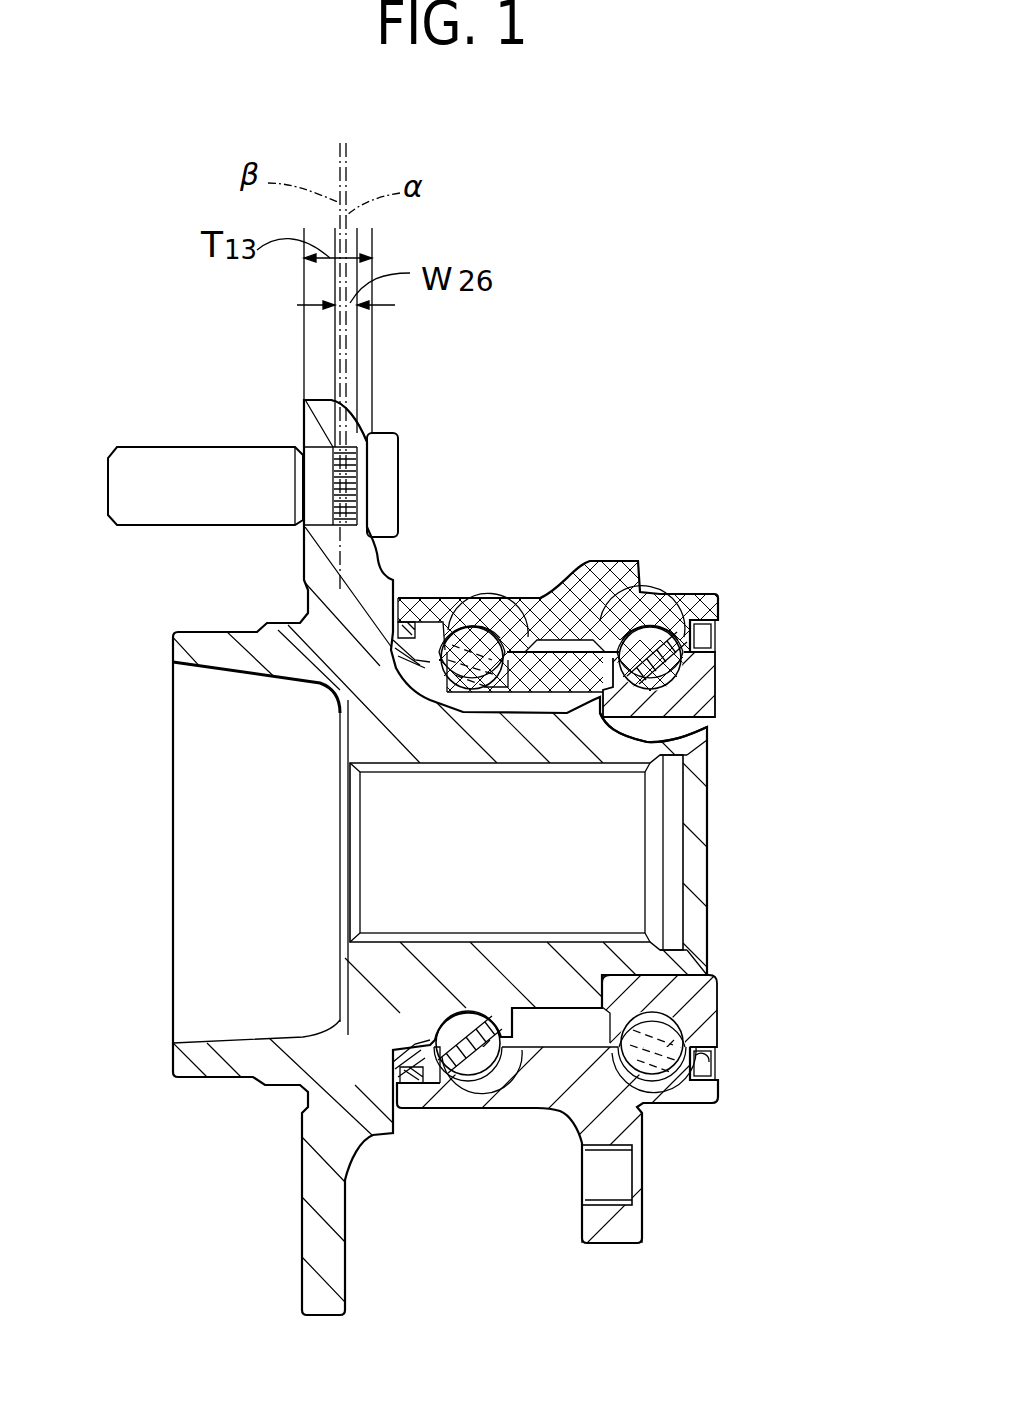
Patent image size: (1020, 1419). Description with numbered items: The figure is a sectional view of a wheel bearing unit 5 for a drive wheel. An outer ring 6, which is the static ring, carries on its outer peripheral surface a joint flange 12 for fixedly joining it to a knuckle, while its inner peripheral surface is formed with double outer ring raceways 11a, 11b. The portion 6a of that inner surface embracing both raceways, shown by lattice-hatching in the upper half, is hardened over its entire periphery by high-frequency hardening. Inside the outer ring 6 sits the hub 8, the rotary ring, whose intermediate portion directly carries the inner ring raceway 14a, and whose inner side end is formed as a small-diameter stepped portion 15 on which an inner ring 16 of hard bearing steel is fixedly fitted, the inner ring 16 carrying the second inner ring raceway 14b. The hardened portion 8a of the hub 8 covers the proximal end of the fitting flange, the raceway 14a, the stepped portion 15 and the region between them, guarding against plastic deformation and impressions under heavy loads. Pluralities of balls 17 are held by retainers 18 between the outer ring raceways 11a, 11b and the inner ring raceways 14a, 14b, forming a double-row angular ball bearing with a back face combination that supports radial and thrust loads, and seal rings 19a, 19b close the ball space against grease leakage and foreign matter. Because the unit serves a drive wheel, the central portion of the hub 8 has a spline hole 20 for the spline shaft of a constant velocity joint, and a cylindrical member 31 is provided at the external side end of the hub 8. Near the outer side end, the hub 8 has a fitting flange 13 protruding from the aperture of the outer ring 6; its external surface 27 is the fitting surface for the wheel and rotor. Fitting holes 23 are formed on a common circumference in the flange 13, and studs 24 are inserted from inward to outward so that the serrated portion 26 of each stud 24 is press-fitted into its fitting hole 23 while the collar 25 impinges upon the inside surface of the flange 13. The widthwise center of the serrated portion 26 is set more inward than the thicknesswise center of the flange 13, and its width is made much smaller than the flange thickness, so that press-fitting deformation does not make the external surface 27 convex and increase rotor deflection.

The wheel bearing unit 5 is at (636, 506).
The outer ring 6 is at (505, 894).
The hardened portion of outer ring inner peripheral surface 6a is at (548, 640).
The hub 8 is at (357, 685).
The hardened portion of hub 8a is at (533, 698).
The outer ring raceway 11a is at (477, 617).
The outer ring raceway 11b is at (643, 633).
The joint flange 12 is at (612, 1232).
The fitting flange 13 is at (303, 400).
The inner ring raceway 14a is at (470, 690).
The inner ring raceway 14b is at (637, 693).
The small-diameter stepped portion 15 is at (712, 717).
The inner ring 16 is at (698, 680).
The balls 17 is at (480, 640).
The retainers 18 is at (507, 1007).
The seal ring 19a is at (420, 1055).
The seal ring 19b is at (688, 1050).
The spline hole 20 is at (392, 932).
The fitting hole 23 is at (300, 452).
The stud 24 is at (162, 457).
The collar 25 is at (390, 453).
The serrated portion 26 is at (340, 560).
The external surface 27 is at (303, 547).
The cylindrical member 31 is at (190, 1058).